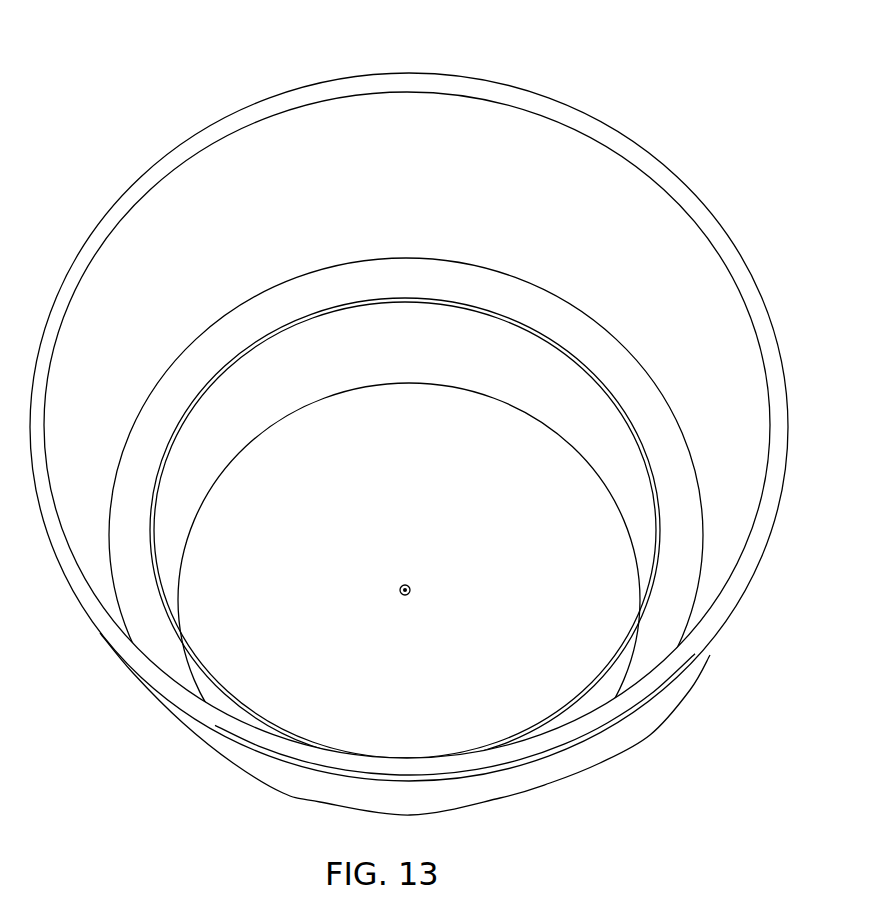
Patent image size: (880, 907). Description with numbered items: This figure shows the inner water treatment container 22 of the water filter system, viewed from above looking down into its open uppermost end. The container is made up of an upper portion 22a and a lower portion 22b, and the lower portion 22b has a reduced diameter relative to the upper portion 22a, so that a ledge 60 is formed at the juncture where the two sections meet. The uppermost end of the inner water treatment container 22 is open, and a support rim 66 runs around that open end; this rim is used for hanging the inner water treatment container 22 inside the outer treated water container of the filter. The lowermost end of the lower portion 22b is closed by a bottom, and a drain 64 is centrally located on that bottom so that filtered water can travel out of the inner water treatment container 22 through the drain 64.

The inner water treatment container 22 is at (135, 136).
The upper portion 22a is at (565, 197).
The support rim 66 is at (690, 200).
The ledge 60 is at (213, 353).
The lower portion 22b is at (443, 350).
The drain 64 is at (398, 583).